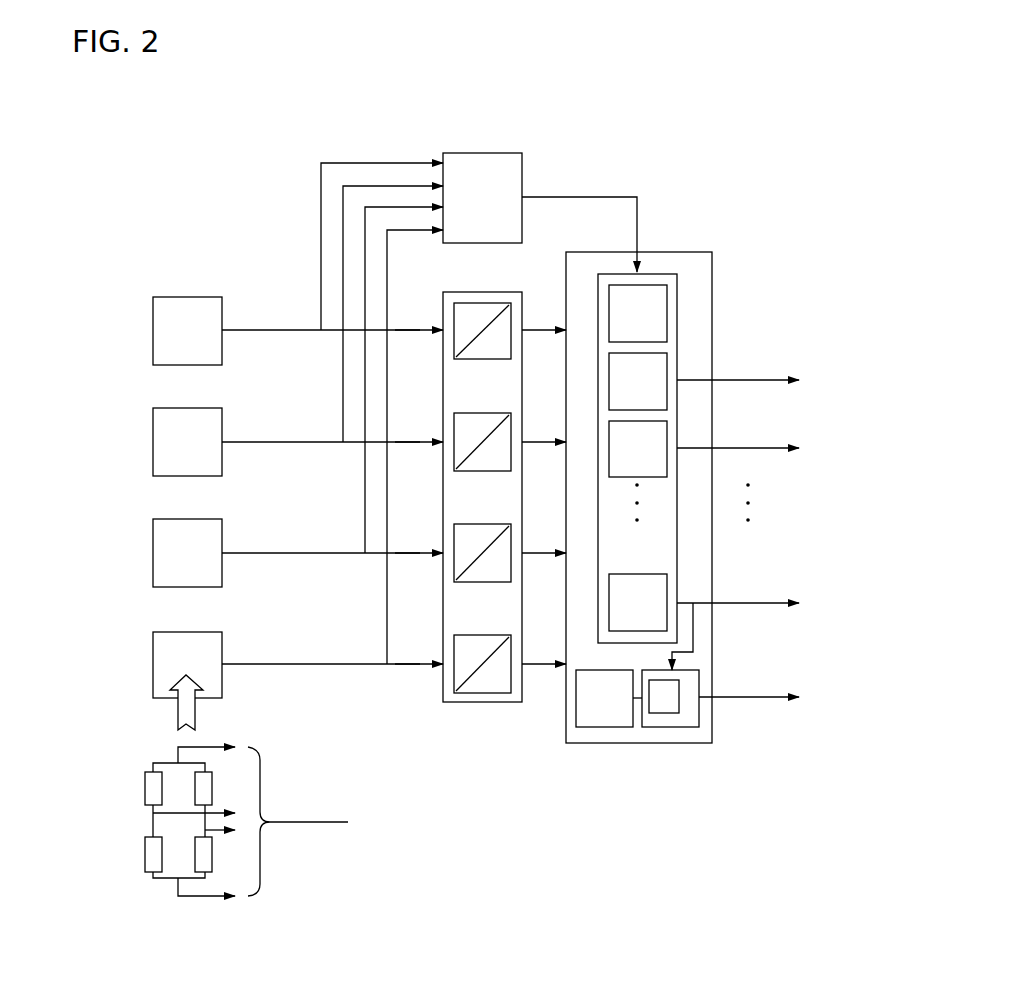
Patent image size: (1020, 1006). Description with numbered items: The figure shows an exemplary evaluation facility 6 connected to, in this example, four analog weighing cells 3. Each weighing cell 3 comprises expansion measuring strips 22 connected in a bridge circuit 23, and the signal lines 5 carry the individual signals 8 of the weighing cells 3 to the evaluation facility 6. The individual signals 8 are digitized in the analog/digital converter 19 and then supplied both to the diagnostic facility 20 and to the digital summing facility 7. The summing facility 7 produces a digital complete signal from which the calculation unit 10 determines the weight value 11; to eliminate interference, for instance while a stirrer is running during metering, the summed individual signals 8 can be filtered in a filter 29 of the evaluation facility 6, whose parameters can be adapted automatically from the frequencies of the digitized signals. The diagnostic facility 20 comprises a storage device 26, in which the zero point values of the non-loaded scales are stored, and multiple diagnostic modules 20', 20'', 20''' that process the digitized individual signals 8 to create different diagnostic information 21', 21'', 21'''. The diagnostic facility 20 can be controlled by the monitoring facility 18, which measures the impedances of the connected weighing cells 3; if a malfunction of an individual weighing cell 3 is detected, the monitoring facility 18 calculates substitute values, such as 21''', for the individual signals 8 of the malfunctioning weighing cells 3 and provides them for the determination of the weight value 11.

The weighing cell 3 is at (152, 330).
The sensor signal line 5 is at (261, 333).
The evaluation facility 6 is at (487, 152).
The summing facility 7 is at (603, 729).
The individual signal 8 is at (413, 326).
The calculation unit 10 is at (704, 683).
The weight value 11 is at (766, 700).
The monitoring facility 18 is at (523, 169).
The analog/digital converter 19 is at (478, 704).
The diagnostic facility 20 is at (658, 476).
The diagnostic module 20' is at (638, 381).
The diagnostic module 20'' is at (638, 449).
The diagnostic module 20''' is at (640, 582).
The diagnostic information 21' is at (738, 352).
The diagnostic information 21'' is at (738, 420).
The diagnostic information 21''' is at (735, 608).
The expansion measuring strip 22 is at (145, 790).
The bridge circuit 23 is at (228, 799).
The storage device 26 is at (638, 313).
The filter 29 is at (658, 718).